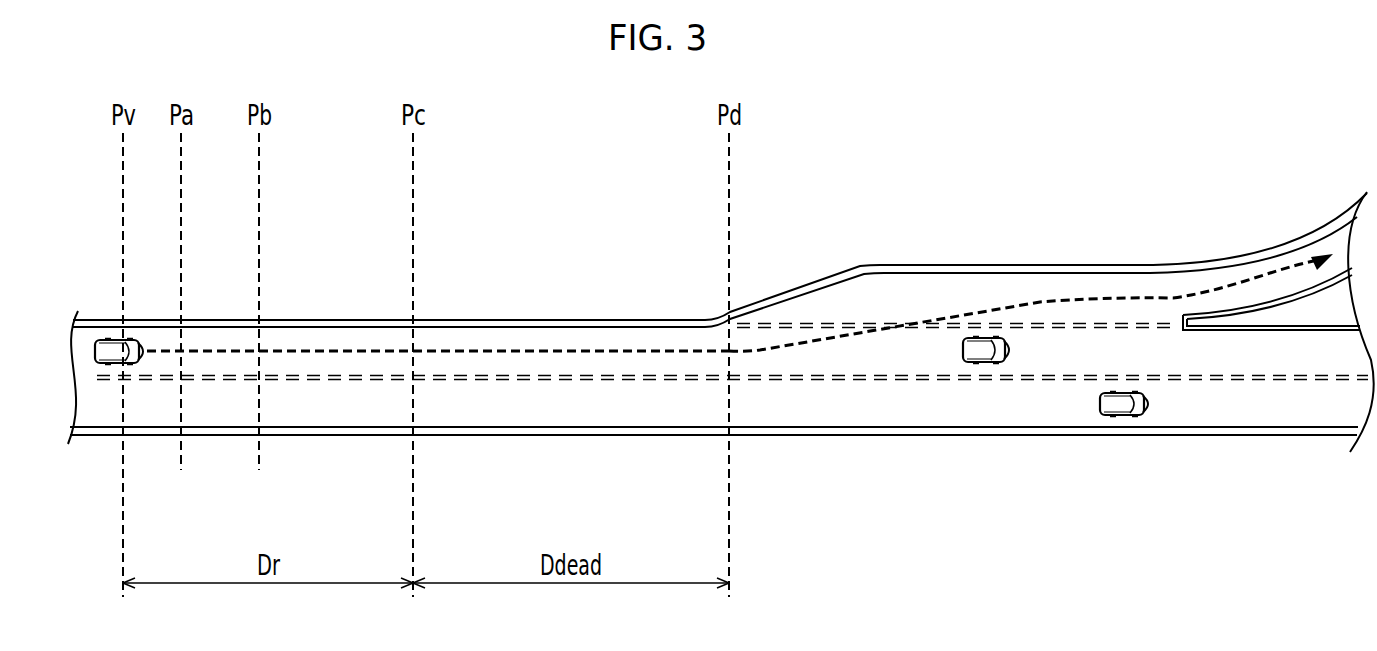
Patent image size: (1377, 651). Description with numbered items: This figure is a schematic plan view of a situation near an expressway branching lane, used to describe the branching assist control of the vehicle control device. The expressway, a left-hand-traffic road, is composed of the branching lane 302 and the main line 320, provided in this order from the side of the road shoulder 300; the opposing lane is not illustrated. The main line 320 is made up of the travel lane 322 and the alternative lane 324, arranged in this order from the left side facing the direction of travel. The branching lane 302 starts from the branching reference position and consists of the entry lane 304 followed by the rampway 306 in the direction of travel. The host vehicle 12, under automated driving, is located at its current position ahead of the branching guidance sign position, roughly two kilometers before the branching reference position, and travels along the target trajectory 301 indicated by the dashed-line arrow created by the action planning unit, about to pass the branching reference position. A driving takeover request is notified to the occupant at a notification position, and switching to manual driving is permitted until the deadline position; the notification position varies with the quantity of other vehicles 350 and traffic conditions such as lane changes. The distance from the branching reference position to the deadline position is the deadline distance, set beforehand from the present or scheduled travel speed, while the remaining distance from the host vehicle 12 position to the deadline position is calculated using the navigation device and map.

The host vehicle 12 is at (113, 342).
The road shoulder 300 is at (918, 264).
The target trajectory 301 is at (607, 350).
The branching lane 302 is at (1283, 193).
The entry lane 304 is at (1048, 290).
The rampway 306 is at (1292, 262).
The main line 320 is at (622, 483).
The travel lane 322 is at (505, 366).
The alternative lane 324 is at (593, 408).
The other vehicles 350 is at (1182, 400).